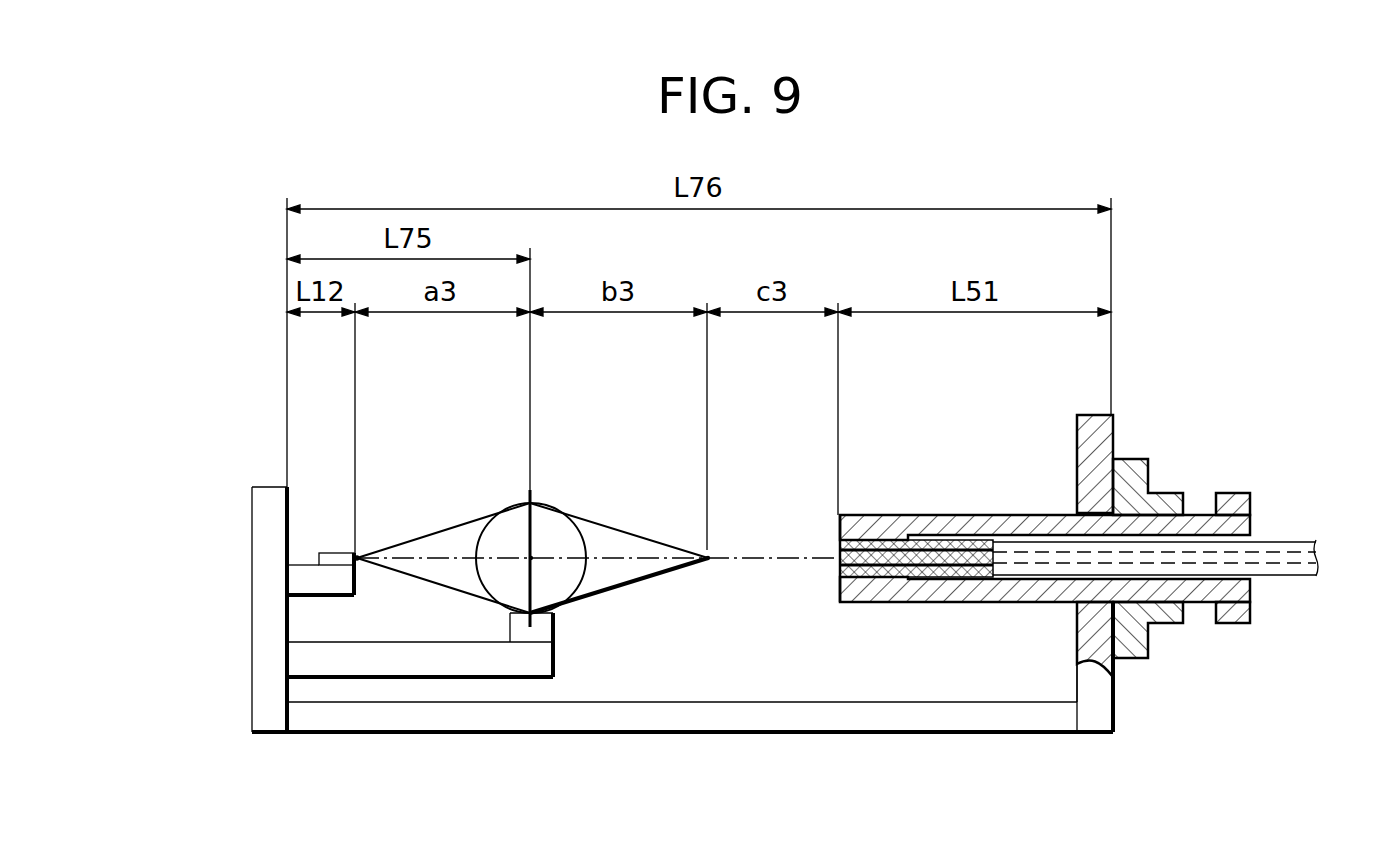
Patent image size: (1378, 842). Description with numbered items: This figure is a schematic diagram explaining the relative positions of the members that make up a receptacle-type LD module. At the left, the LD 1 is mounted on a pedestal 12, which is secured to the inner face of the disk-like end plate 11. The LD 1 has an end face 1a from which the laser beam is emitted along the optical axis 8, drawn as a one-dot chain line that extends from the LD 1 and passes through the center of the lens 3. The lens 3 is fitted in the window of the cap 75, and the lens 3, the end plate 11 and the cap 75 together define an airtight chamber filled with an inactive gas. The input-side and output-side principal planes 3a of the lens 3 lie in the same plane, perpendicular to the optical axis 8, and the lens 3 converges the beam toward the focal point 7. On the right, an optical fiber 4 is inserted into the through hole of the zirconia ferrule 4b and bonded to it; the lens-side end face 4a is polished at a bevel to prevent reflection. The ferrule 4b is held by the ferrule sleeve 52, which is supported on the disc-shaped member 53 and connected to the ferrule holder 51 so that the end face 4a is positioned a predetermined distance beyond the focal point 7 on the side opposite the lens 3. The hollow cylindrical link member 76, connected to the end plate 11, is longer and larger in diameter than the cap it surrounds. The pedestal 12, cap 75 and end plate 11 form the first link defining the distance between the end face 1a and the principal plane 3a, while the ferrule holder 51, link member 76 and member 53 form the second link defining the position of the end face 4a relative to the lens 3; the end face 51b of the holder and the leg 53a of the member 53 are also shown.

The LD 1 is at (336, 553).
The end face 1a is at (360, 556).
The lens 3 is at (541, 501).
The principal planes 3a is at (529, 535).
The optical fiber 4 is at (882, 578).
The end face 4a is at (840, 567).
The ferrule 4b is at (952, 550).
The focal point 7 is at (713, 562).
The optical axis 8 is at (622, 566).
The end plate 11 is at (250, 645).
The pedestal 12 is at (302, 562).
The ferrule holder 51 is at (1197, 512).
The sleeve end face 51b is at (838, 524).
The ferrule sleeve 52 is at (1152, 493).
The member 53 is at (1090, 415).
The flange leg 53a is at (1113, 697).
The cap 75 is at (376, 652).
The link member 76 is at (740, 734).